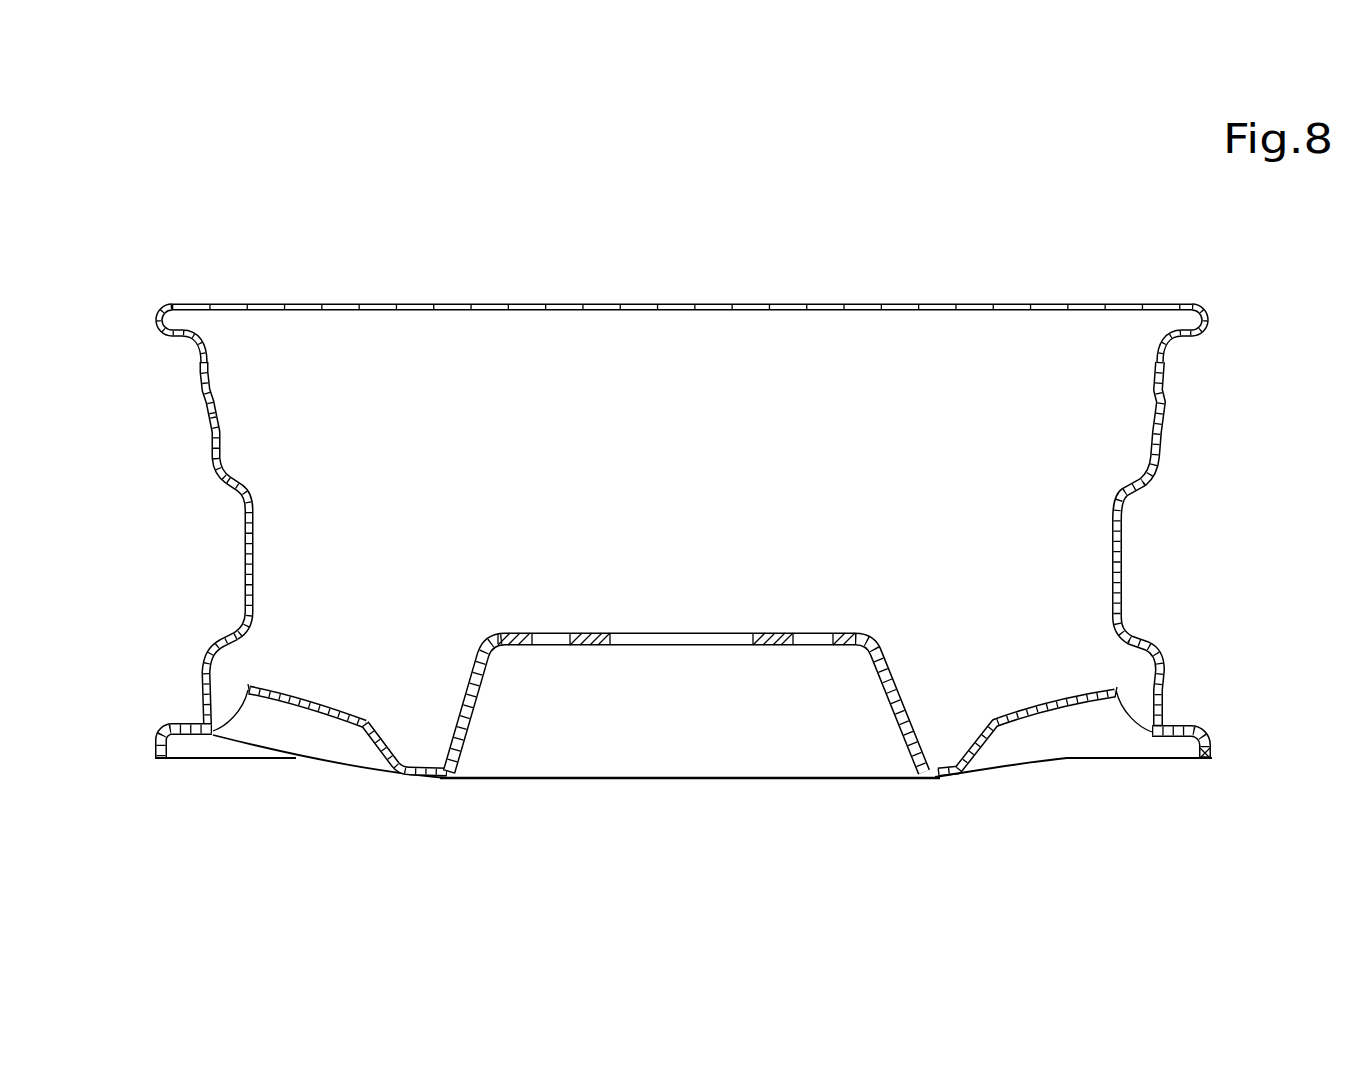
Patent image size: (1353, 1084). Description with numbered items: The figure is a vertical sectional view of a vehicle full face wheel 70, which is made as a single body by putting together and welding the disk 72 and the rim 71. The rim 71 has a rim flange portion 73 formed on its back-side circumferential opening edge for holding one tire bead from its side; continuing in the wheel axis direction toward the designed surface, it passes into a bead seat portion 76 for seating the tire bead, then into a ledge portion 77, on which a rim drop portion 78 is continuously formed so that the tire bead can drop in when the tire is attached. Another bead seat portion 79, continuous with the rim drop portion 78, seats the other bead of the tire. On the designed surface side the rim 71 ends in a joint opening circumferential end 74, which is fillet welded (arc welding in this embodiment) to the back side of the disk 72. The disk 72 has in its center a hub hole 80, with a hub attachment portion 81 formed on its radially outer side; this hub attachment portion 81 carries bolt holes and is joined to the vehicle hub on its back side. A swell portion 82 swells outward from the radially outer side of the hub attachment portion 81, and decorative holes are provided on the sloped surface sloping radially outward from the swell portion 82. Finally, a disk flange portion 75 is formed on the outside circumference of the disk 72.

The vehicle full face wheel 70 is at (900, 260).
The rim 71 is at (395, 345).
The disk 72 is at (590, 728).
The rim flange portion 73 is at (158, 337).
The joint opening circumferential end 74 is at (1165, 720).
The disk flange portion 75 is at (1212, 757).
The bead seat portion 76 is at (202, 368).
The ledge portion 77 is at (212, 435).
The rim drop portion 78 is at (250, 548).
The bead seat portion 79 is at (200, 693).
The hub hole 80 is at (643, 638).
The hub attachment portion 81 is at (767, 637).
The swell portion 82 is at (415, 777).